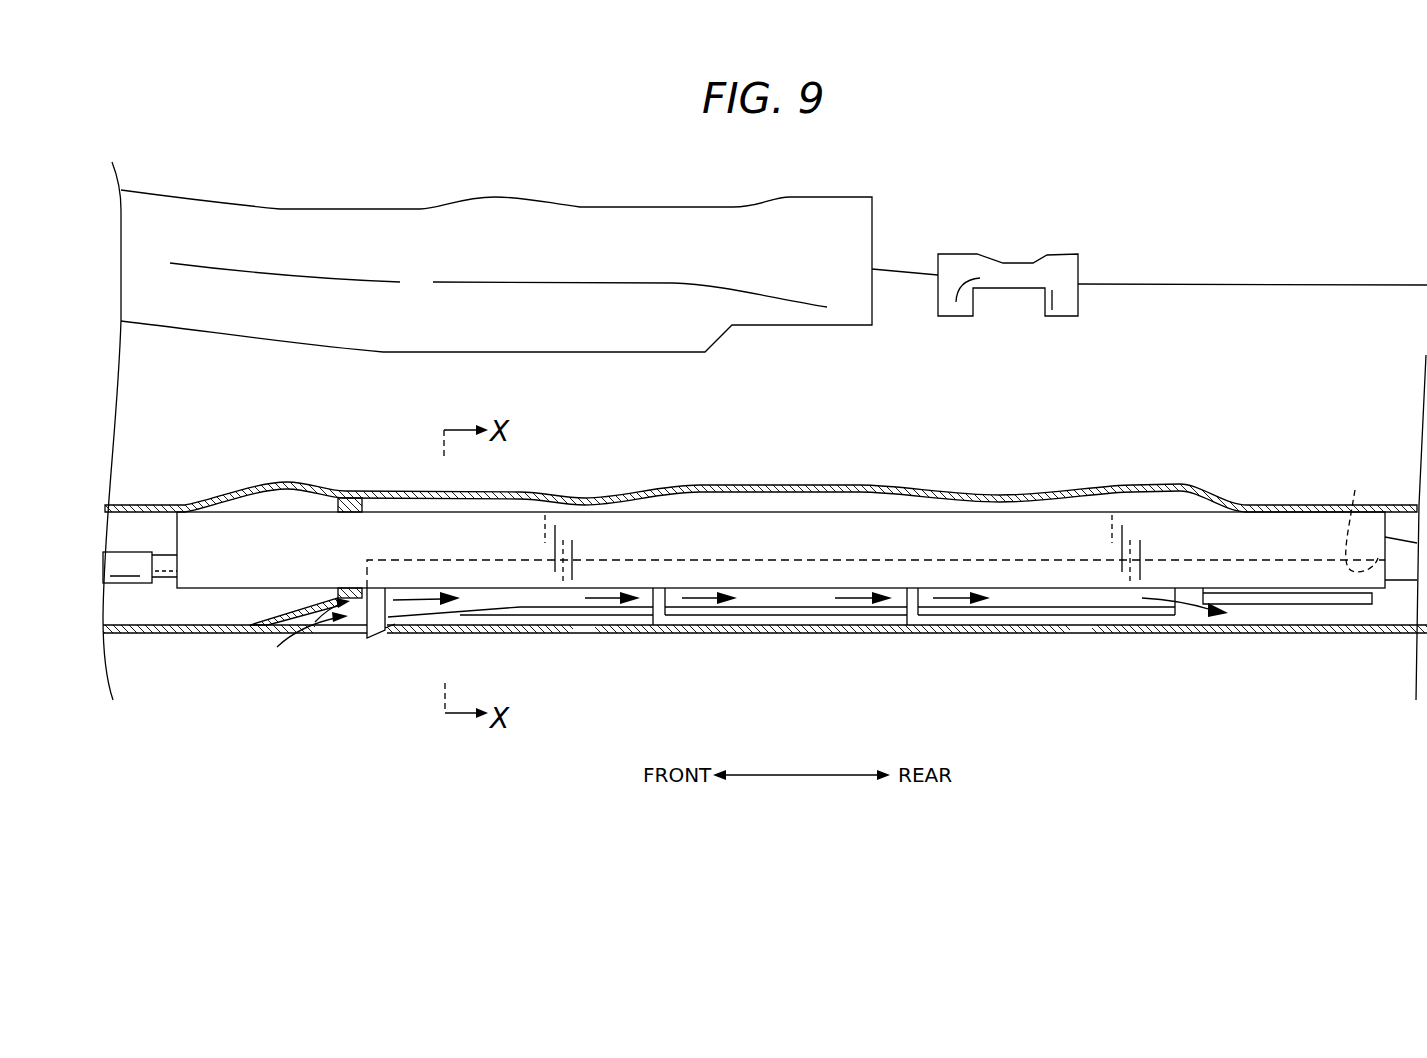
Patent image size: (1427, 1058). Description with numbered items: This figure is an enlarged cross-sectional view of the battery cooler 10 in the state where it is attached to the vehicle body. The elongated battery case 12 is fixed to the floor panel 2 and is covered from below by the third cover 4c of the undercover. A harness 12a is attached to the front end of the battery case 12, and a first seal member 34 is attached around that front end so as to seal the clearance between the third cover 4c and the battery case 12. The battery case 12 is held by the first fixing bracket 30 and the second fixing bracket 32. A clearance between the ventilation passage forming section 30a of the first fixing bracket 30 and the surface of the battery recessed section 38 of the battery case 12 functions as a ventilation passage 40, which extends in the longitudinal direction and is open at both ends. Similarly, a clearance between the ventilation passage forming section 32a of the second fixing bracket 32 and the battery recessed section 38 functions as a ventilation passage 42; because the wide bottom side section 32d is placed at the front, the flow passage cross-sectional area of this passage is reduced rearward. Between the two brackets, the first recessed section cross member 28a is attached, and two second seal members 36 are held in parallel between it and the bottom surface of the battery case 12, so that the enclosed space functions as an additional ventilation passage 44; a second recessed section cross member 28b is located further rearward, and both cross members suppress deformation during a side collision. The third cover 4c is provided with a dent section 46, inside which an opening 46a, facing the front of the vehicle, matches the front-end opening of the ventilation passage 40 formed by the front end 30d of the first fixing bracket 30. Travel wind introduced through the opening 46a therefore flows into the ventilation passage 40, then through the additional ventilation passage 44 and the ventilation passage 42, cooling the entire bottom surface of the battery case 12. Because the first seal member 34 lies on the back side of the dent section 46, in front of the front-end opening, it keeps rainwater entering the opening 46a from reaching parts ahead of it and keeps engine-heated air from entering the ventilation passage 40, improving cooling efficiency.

The battery cooler 10 is at (1314, 724).
The floor panel 2 is at (223, 497).
The first seal member 34 is at (352, 498).
The battery case 12 is at (1316, 530).
The battery recessed section 38 is at (1359, 516).
The harness 12a is at (142, 584).
The third cover 4c is at (223, 633).
The dent section 46 is at (290, 613).
The opening 46a is at (352, 616).
The front end of first fixing bracket 30d is at (377, 637).
The ventilation passage forming section 30a is at (503, 617).
The first fixing bracket 30 is at (583, 636).
The ventilation passage 40 is at (533, 600).
The first recessed section cross member 28a is at (740, 618).
The additional ventilation passage 44 is at (762, 600).
The second seal member 36 is at (826, 600).
The wide bottom side section 32d is at (913, 617).
The ventilation passage forming section 32a is at (983, 617).
The ventilation passage 42 is at (1012, 600).
The second fixing bracket 32 is at (1081, 637).
The second recessed section cross member 28b is at (1238, 606).